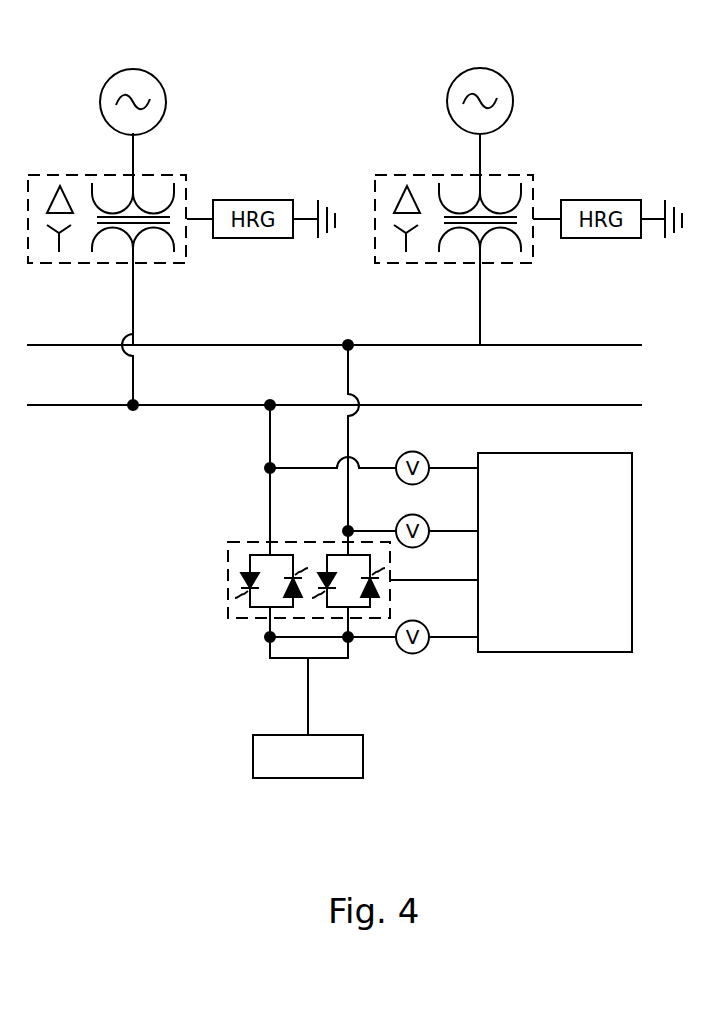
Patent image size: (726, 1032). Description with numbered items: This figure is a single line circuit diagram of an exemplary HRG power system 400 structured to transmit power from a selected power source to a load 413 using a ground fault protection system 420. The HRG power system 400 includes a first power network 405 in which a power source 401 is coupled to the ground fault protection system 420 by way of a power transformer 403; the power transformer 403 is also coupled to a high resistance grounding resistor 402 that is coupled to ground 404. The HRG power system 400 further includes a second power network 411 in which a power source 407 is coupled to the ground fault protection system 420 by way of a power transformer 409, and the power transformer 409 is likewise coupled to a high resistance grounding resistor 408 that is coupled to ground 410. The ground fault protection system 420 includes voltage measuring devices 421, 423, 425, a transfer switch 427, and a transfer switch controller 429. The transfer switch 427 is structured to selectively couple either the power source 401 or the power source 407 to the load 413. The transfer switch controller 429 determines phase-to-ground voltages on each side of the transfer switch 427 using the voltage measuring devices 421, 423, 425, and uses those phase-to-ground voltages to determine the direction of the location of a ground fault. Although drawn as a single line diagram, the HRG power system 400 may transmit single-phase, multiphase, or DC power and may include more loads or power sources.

The HRG power system 400 is at (646, 101).
The power source 401 is at (509, 79).
The high resistance grounding resistor 402 is at (623, 202).
The power transformer 403 is at (517, 175).
The ground 404 is at (688, 222).
The power network 405 is at (540, 340).
The power source 407 is at (161, 79).
The high resistance grounding resistor 408 is at (277, 200).
The power transformer 409 is at (172, 175).
The ground 410 is at (338, 223).
The power network 411 is at (180, 414).
The load 413 is at (347, 733).
The ground fault protection system 420 is at (645, 664).
The voltage measuring device 421 is at (423, 455).
The voltage measuring device 423 is at (425, 520).
The voltage measuring device 425 is at (425, 627).
The transfer switch 427 is at (229, 570).
The transfer switch controller 429 is at (553, 653).